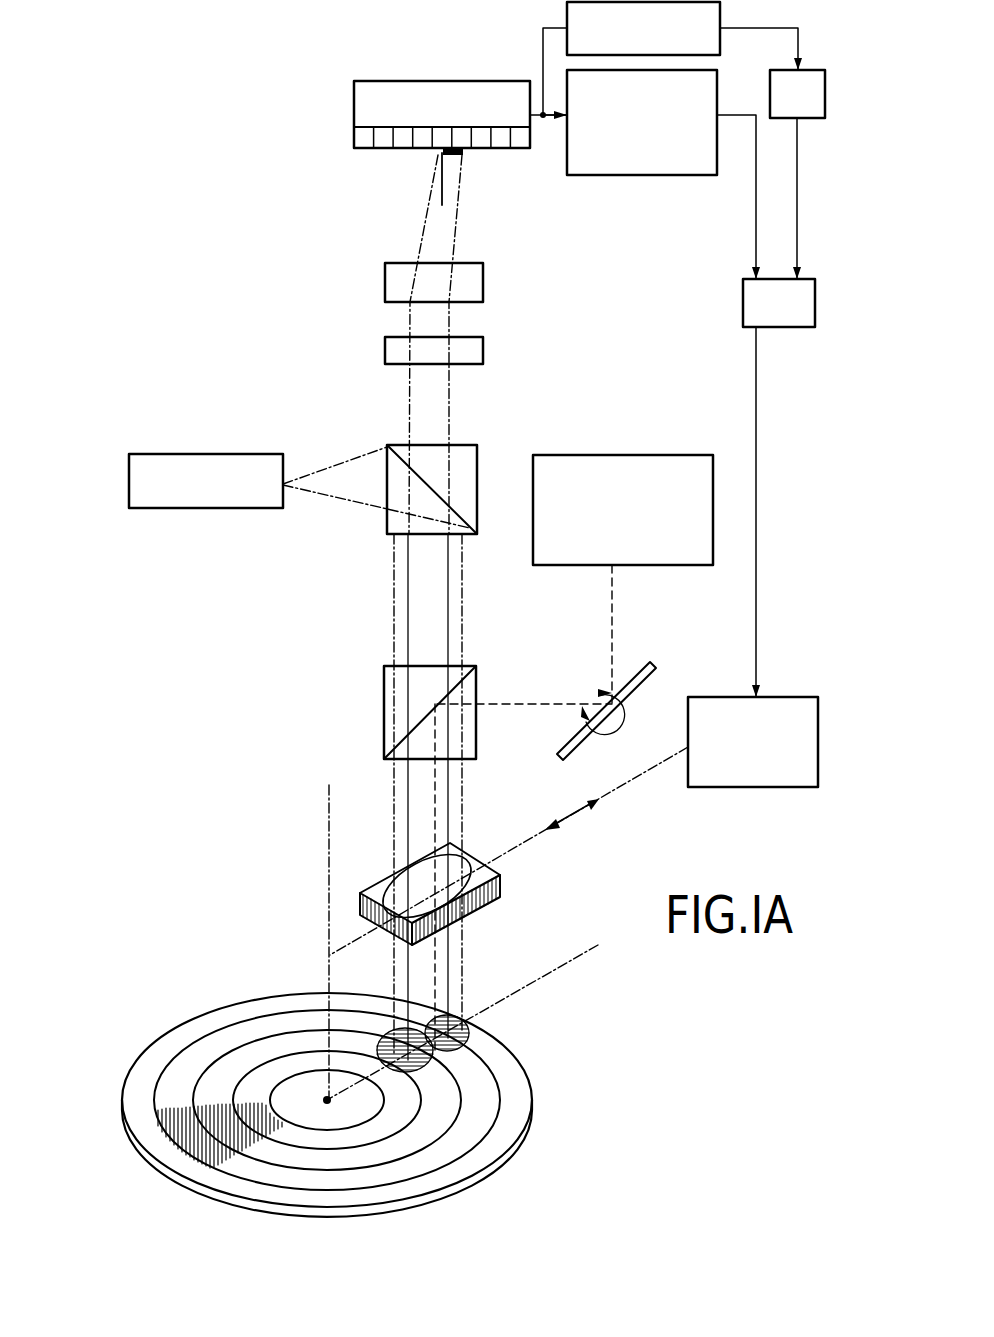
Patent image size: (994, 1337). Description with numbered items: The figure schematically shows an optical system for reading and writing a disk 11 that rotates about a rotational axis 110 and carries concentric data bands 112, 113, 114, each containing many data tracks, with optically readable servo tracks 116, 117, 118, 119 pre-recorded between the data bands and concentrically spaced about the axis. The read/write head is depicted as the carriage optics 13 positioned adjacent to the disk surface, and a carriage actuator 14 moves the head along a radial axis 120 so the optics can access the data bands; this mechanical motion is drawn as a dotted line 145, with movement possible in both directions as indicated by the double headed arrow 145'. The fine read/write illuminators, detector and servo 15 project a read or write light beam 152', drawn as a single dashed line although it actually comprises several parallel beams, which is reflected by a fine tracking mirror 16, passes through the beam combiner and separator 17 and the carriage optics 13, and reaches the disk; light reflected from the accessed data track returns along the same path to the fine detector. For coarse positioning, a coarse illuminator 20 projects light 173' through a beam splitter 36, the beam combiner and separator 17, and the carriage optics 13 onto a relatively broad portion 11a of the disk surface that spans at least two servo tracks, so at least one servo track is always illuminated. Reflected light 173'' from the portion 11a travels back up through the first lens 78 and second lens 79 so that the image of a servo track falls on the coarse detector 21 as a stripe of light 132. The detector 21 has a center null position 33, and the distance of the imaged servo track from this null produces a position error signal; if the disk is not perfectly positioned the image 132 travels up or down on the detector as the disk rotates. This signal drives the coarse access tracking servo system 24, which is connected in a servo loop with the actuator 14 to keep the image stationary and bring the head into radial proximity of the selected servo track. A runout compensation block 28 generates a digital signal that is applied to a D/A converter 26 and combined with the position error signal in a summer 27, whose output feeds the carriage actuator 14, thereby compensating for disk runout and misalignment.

The coarse detector 21 is at (354, 117).
The stripe of light 132 is at (453, 157).
The null position 33 is at (442, 191).
The reflected light 173'' is at (464, 344).
The runout compensation 28 is at (722, 17).
The coarse access tracking servo system 24 is at (645, 176).
The D/A converter 26 is at (825, 81).
The summer 27 is at (743, 307).
The second lens 79 is at (385, 280).
The first lens 78 is at (385, 352).
The coarse illuminator 20 is at (180, 454).
The beam splitter 36 is at (477, 494).
The fine read/write illuminators, detector and servo 15 is at (533, 548).
The coarse illuminator light 173' is at (392, 797).
The beam combiner and separator 17 is at (384, 725).
The read or write light beam 152' is at (480, 807).
The fine tracking mirror 16 is at (650, 681).
The carriage actuator 14 is at (748, 788).
The mechanical motion line 145 is at (509, 851).
The double headed arrow 145' is at (568, 808).
The carriage optics 13 is at (500, 883).
The rotational axis 110 is at (329, 800).
The radial axis 120 is at (566, 962).
The disk 11 is at (122, 1137).
The illuminated portion of the disk surface 11a is at (453, 1047).
The servo track 116 is at (487, 1065).
The servo track 117 is at (473, 1085).
The servo track 118 is at (467, 1120).
The servo track 119 is at (493, 1141).
The data band 112 is at (187, 1103).
The data band 113 is at (205, 1082).
The data band 114 is at (227, 1080).